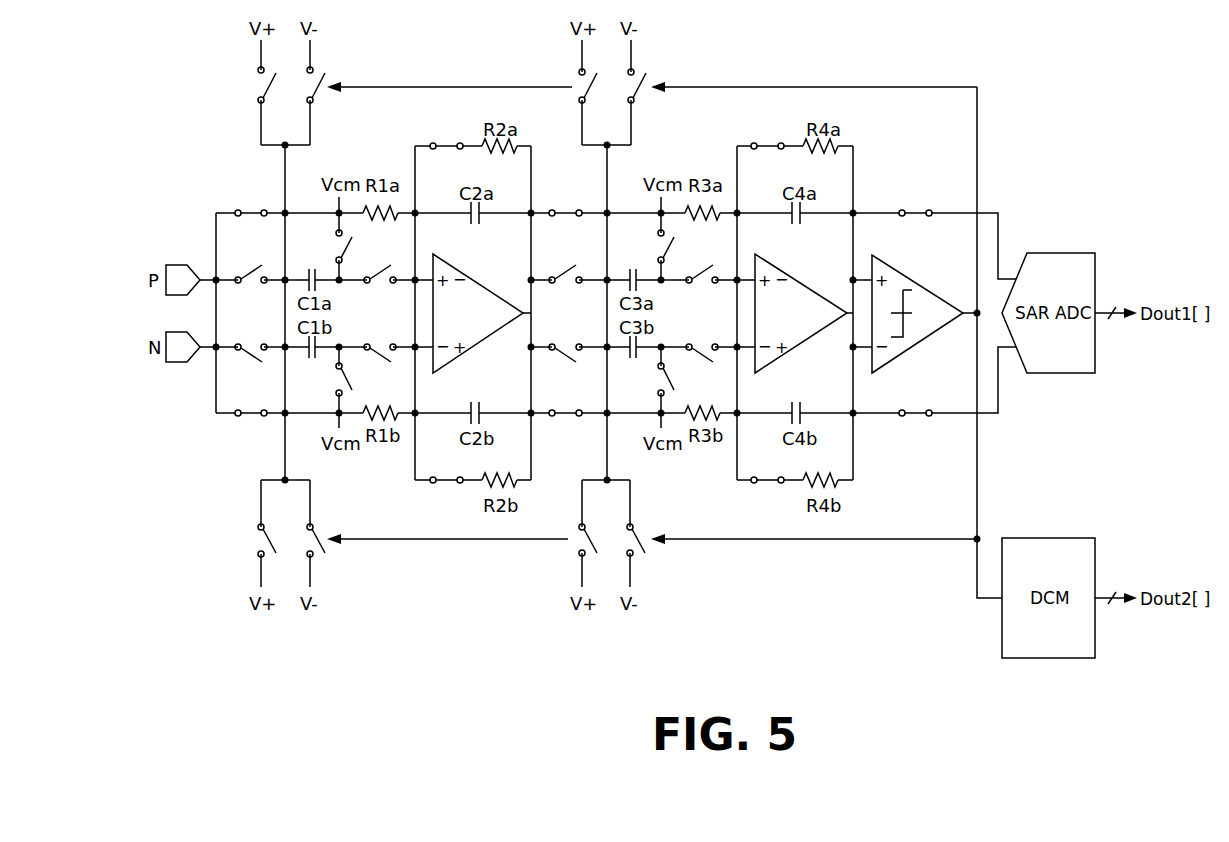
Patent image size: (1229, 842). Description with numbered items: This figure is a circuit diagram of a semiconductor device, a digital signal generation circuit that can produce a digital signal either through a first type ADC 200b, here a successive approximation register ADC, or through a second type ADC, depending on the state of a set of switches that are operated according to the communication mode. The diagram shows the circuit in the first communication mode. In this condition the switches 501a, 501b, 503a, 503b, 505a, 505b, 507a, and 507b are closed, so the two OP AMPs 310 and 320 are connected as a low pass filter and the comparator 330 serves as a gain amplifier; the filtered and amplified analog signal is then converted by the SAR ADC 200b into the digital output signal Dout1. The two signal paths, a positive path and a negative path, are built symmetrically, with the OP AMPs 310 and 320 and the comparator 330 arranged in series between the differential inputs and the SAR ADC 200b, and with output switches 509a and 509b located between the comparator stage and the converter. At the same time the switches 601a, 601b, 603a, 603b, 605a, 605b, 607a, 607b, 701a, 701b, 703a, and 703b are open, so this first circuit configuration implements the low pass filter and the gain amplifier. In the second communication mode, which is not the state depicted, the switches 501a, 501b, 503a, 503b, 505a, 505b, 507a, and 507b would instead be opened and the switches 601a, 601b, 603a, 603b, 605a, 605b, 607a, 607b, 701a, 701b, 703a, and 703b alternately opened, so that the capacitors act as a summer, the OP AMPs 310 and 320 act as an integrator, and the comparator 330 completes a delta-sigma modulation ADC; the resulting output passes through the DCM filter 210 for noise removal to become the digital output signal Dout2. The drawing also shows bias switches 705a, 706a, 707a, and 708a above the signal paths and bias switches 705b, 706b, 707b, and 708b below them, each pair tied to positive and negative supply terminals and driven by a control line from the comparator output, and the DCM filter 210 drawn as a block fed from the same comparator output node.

The V+ bias switch (first stage, upper) 705a is at (259, 87).
The V- bias switch (first stage, upper) 706a is at (320, 92).
The V+ bias switch (second stage, upper) 707a is at (581, 86).
The V- bias switch (second stage, upper) 708a is at (644, 92).
The V+ bias switch (first stage, lower) 705b is at (259, 549).
The V- bias switch (first stage, lower) 706b is at (320, 540).
The V+ bias switch (second stage, lower) 707b is at (580, 543).
The V- bias switch (second stage, lower) 708b is at (646, 538).
The switch 501a is at (247, 210).
The switch 501b is at (247, 417).
The switch 503a is at (444, 143).
The switch 503b is at (444, 484).
The switch 505a is at (563, 210).
The switch 505b is at (563, 417).
The switch 507a is at (766, 143).
The switch 507b is at (766, 484).
The output switch (positive path) 509a is at (913, 210).
The output switch (negative path) 509b is at (913, 417).
The switch 601a is at (247, 270).
The switch 601b is at (248, 366).
The switch 603a is at (342, 246).
The switch 603b is at (342, 382).
The switch 605a is at (565, 270).
The switch 605b is at (565, 366).
The switch 607a is at (664, 246).
The switch 607b is at (664, 382).
The switch 701a is at (379, 270).
The switch 701b is at (380, 366).
The switch 703a is at (702, 270).
The switch 703b is at (703, 366).
The OP AMP 310 is at (463, 271).
The OP AMP 320 is at (786, 271).
The comparator 330 is at (900, 271).
The first type ADC 200b is at (1061, 252).
The DCM filter 210 is at (1048, 537).